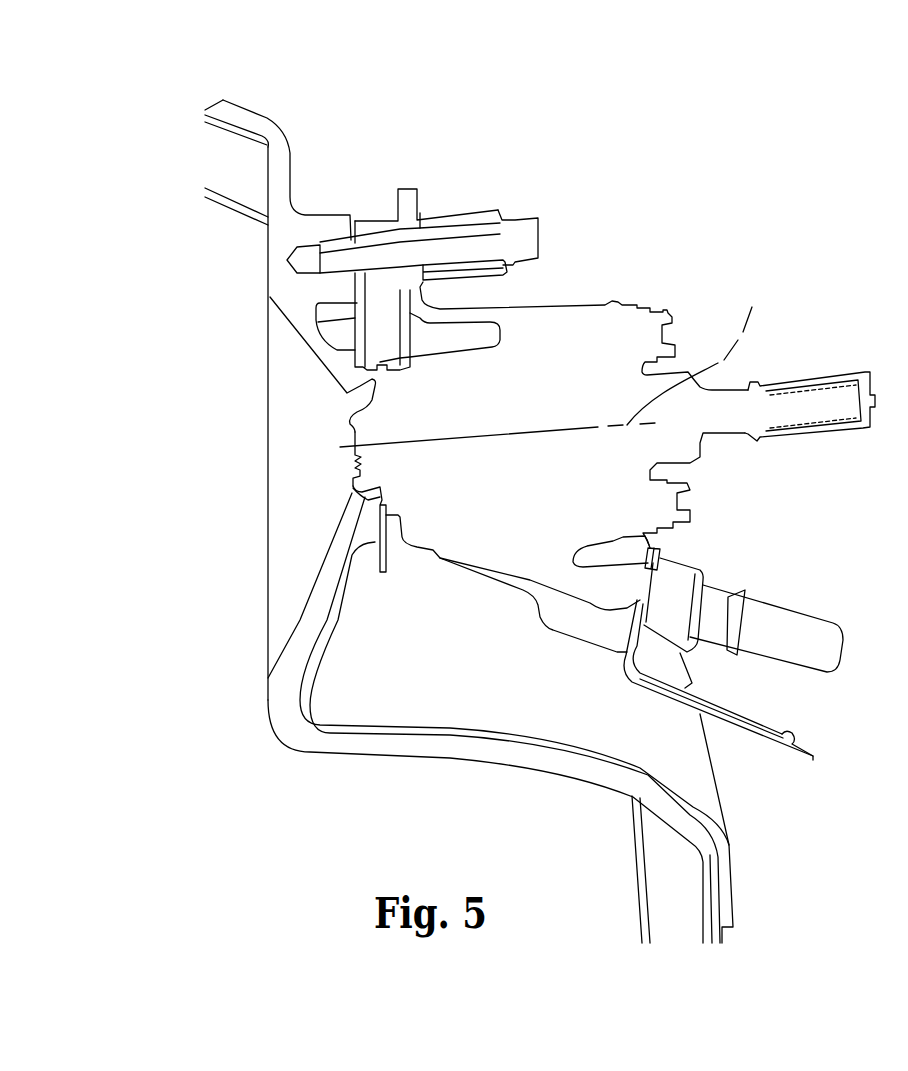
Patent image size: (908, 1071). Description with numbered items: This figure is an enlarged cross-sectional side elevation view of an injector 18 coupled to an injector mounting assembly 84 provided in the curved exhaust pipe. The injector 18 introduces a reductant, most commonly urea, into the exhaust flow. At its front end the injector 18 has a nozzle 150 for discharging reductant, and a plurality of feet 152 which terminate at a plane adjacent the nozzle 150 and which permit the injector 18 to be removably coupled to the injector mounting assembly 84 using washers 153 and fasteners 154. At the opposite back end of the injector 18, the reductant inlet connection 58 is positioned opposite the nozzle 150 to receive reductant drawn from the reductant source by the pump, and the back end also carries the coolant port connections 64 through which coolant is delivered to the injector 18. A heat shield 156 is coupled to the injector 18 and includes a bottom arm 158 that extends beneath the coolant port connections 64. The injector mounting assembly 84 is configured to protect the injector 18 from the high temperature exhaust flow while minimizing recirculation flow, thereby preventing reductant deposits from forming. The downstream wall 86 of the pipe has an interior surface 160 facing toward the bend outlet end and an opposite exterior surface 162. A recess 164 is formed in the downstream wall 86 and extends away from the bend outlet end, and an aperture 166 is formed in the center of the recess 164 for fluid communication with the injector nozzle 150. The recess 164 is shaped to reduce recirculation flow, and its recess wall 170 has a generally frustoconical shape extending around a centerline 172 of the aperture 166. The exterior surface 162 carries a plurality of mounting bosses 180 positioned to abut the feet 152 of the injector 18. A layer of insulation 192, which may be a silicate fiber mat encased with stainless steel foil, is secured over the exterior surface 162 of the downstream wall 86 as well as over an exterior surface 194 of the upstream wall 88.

The injector 18 is at (614, 298).
The inlet connection 58 is at (820, 410).
The coolant port connections 64 is at (813, 622).
The injector mounting assembly 84 is at (310, 752).
The downstream wall 86 is at (277, 260).
The upstream wall 88 is at (550, 757).
The nozzle 150 is at (360, 453).
The feet 152 is at (373, 227).
The washers 153 is at (455, 217).
The fasteners 154 is at (522, 232).
The heat shield 156 is at (748, 735).
The bottom arm 158 is at (780, 738).
The interior surface 160 is at (267, 700).
The exterior surface 162 is at (305, 658).
The recess 164 is at (268, 414).
The aperture 166 is at (353, 490).
The recess wall 170 is at (283, 455).
The centerline 172 is at (559, 363).
The mounting bosses 180 is at (307, 223).
The layer of insulation 192 is at (700, 810).
The exterior surface 194 is at (372, 722).